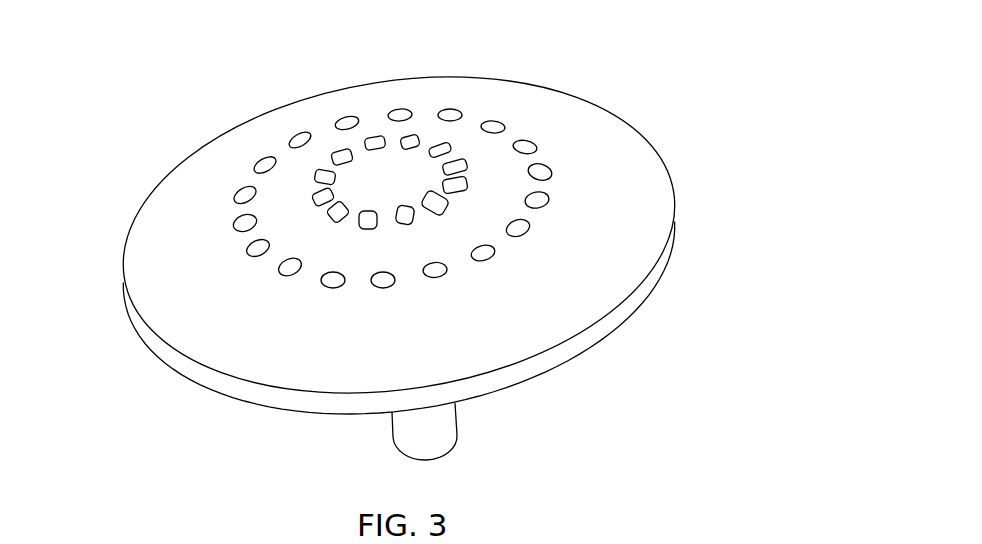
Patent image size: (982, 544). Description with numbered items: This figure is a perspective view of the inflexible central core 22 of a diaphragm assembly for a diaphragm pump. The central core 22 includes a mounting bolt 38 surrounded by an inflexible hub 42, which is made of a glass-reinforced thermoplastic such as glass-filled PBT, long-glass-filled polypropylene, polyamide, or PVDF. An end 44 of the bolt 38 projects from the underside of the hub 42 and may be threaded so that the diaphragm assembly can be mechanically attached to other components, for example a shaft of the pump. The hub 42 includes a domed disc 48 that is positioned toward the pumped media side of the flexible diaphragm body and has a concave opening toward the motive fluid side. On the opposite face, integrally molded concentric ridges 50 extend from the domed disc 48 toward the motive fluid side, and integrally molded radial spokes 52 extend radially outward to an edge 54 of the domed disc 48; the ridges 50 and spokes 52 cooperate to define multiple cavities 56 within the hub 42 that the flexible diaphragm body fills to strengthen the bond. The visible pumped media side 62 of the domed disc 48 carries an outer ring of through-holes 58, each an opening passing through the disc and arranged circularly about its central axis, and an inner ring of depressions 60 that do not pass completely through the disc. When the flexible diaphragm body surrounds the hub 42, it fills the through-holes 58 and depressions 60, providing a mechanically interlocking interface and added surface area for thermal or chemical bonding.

The inflexible central core 22 is at (791, 74).
The mounting bolt 38 is at (437, 422).
The inflexible hub 42 is at (623, 178).
The end of the bolt 44 is at (461, 453).
The domed disc 48 is at (218, 162).
The concentric ridges 50 is at (258, 426).
The radial spokes 52 is at (398, 318).
The edge of the domed disc 54 is at (666, 280).
The cavities 56 is at (398, 318).
The through-holes 58 is at (347, 115).
The depressions 60 is at (447, 145).
The pumped media side of the domed disc 62 is at (165, 241).